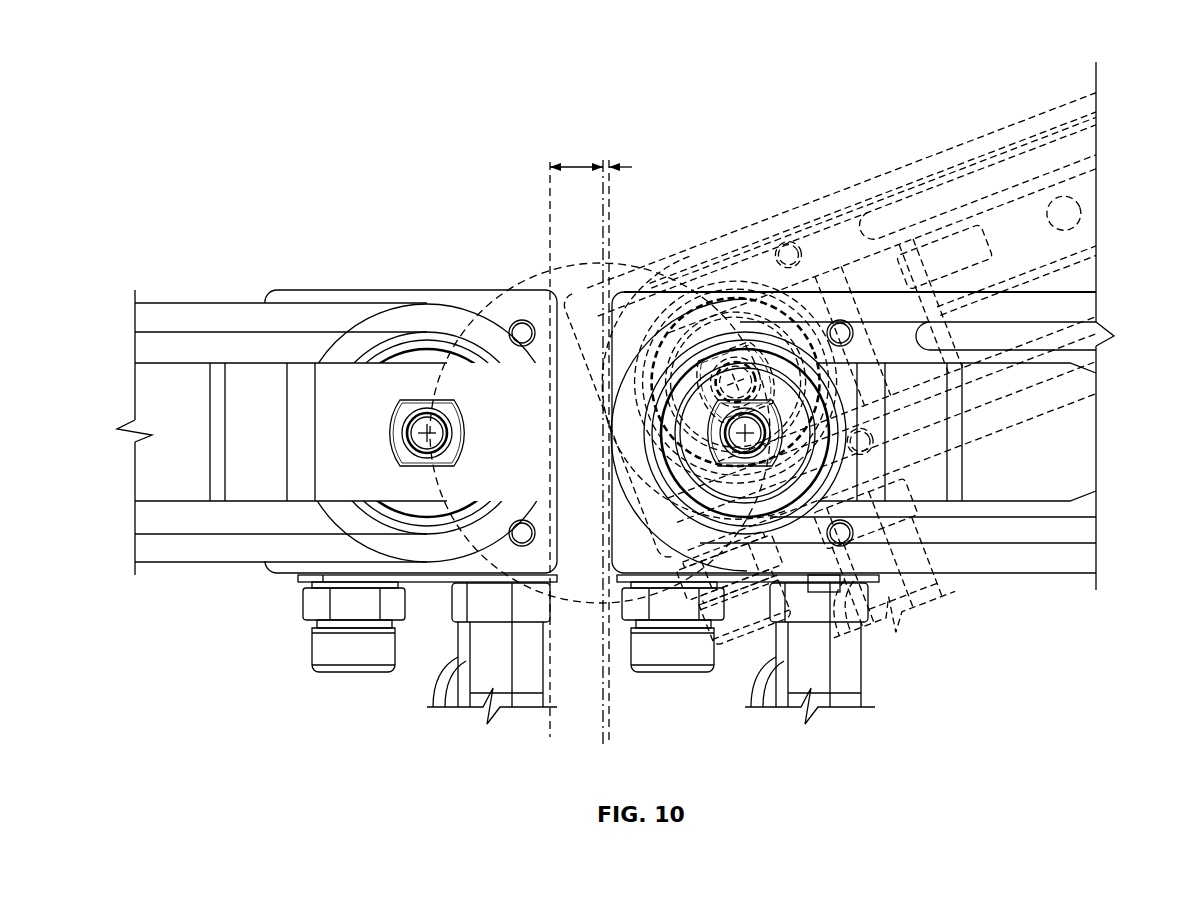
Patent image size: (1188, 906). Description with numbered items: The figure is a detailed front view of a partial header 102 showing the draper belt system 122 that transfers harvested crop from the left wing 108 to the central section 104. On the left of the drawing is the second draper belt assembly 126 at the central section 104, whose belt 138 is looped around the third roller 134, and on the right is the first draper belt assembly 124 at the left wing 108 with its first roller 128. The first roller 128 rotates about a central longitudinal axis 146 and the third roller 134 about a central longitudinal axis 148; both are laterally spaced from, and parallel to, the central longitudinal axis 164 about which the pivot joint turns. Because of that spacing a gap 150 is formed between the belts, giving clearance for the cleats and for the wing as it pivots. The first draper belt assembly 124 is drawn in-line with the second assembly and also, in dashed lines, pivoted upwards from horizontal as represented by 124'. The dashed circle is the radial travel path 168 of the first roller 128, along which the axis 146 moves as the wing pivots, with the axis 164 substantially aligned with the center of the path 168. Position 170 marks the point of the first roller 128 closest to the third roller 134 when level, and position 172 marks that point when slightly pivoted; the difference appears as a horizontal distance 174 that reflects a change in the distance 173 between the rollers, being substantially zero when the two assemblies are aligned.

The header 102 is at (768, 46).
The central section 104 is at (302, 222).
The left wing 108 is at (925, 120).
The draper belt system 122 is at (704, 180).
The first draper belt assembly 124 is at (906, 326).
The first draper belt assembly in pivoted position 124' is at (887, 301).
The second draper belt assembly 126 is at (200, 277).
The first roller 128 is at (790, 505).
The third roller 134 is at (368, 345).
The belt 138 is at (165, 313).
The central longitudinal axis 146 is at (760, 433).
The central longitudinal axis 148 is at (425, 434).
The gap 150 is at (586, 567).
The central longitudinal axis 164 is at (585, 428).
The radial travel path 168 is at (538, 272).
The position 170 is at (610, 215).
The position 172 is at (603, 207).
The distance 173 is at (575, 162).
The horizontal distance 174 is at (620, 165).